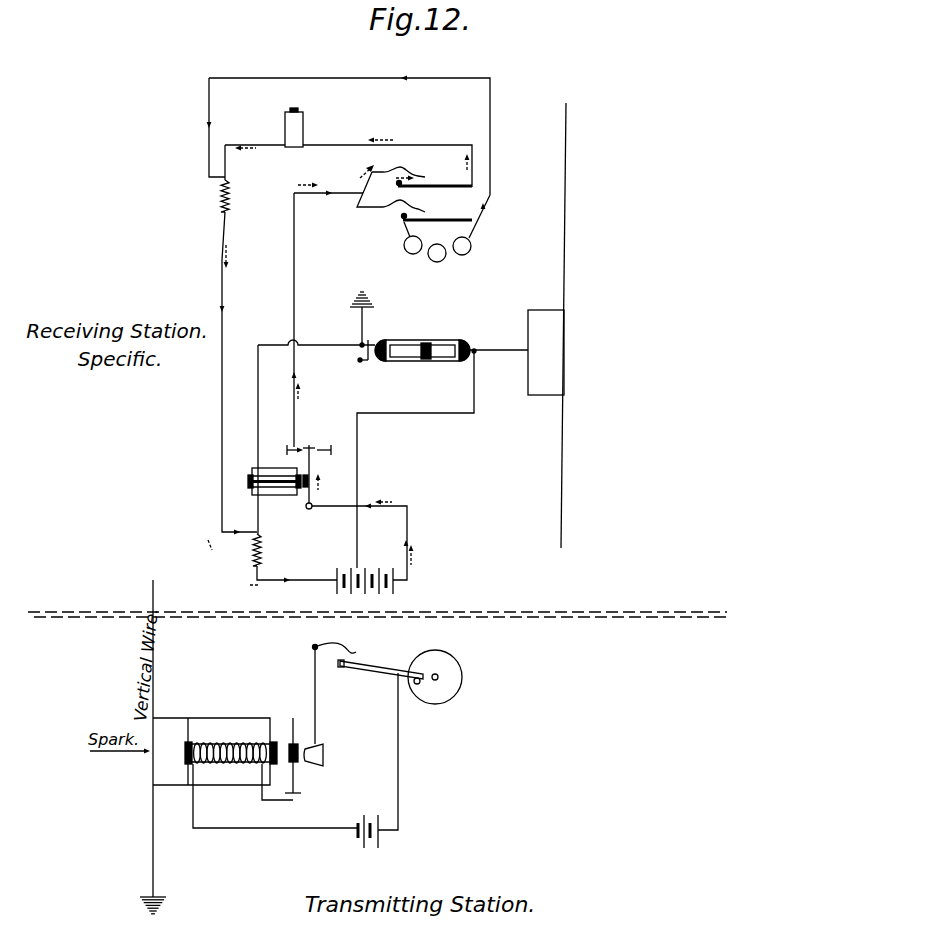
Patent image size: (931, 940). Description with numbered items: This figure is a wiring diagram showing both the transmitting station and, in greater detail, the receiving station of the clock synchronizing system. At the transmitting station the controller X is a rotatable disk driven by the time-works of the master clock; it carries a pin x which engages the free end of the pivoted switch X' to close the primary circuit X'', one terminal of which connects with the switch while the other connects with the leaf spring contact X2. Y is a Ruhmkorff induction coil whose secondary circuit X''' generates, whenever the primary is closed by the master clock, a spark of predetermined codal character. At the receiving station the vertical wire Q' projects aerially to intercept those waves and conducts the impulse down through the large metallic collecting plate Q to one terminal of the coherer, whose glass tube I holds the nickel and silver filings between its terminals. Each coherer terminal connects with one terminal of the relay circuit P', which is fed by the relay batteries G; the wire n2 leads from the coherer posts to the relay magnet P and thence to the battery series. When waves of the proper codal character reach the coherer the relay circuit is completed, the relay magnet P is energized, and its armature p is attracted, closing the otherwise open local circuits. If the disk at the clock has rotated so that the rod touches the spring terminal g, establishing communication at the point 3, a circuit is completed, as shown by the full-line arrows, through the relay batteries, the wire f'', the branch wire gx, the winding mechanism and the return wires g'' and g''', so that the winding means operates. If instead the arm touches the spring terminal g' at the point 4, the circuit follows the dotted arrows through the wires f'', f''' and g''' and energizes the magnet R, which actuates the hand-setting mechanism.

The magnet R is at (303, 127).
The return wire g'' is at (348, 135).
The return wire g''' is at (224, 347).
The wire f''' is at (458, 145).
The wire f'' is at (314, 264).
The spring terminal g' is at (391, 179).
The spring terminal g is at (364, 224).
The point 4 is at (435, 173).
The point 3 is at (426, 225).
The branch wire gx is at (406, 226).
The wire n2 is at (262, 388).
The tube I is at (364, 413).
The metallic collecting plate Q is at (460, 439).
The vertical wire Q' is at (585, 318).
The relay magnet P is at (274, 481).
The relay circuit P' is at (310, 437).
The armature p is at (320, 477).
The relay batteries G is at (331, 547).
The secondary circuit X''' is at (211, 751).
The Ruhmkorff induction coil Y is at (271, 763).
The leaf spring contact X2 is at (350, 645).
The pivoted switch X' is at (380, 745).
The primary circuit X'' is at (360, 826).
The controller X is at (435, 689).
The pin x is at (417, 677).